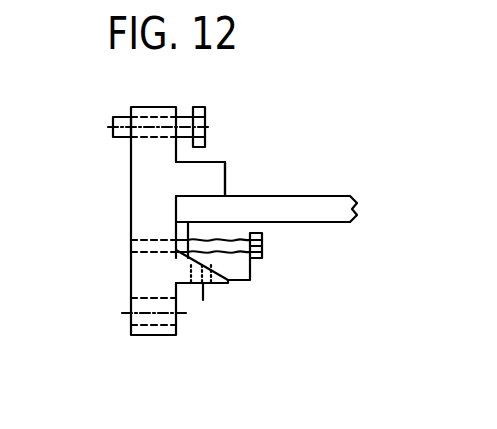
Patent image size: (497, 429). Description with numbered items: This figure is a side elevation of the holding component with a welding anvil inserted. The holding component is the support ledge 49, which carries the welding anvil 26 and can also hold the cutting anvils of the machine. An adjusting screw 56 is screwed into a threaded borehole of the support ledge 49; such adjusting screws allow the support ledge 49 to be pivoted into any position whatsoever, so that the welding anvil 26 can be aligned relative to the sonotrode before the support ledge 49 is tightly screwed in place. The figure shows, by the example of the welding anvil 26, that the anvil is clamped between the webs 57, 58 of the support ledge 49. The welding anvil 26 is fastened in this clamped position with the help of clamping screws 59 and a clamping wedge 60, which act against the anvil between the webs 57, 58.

The welding anvil 26 is at (332, 210).
The support ledge 49 is at (130, 187).
The adjusting screw 56 is at (198, 123).
The web 57 is at (215, 178).
The web 58 is at (220, 285).
The clamping screw 59 is at (262, 250).
The clamping wedge 60 is at (241, 275).